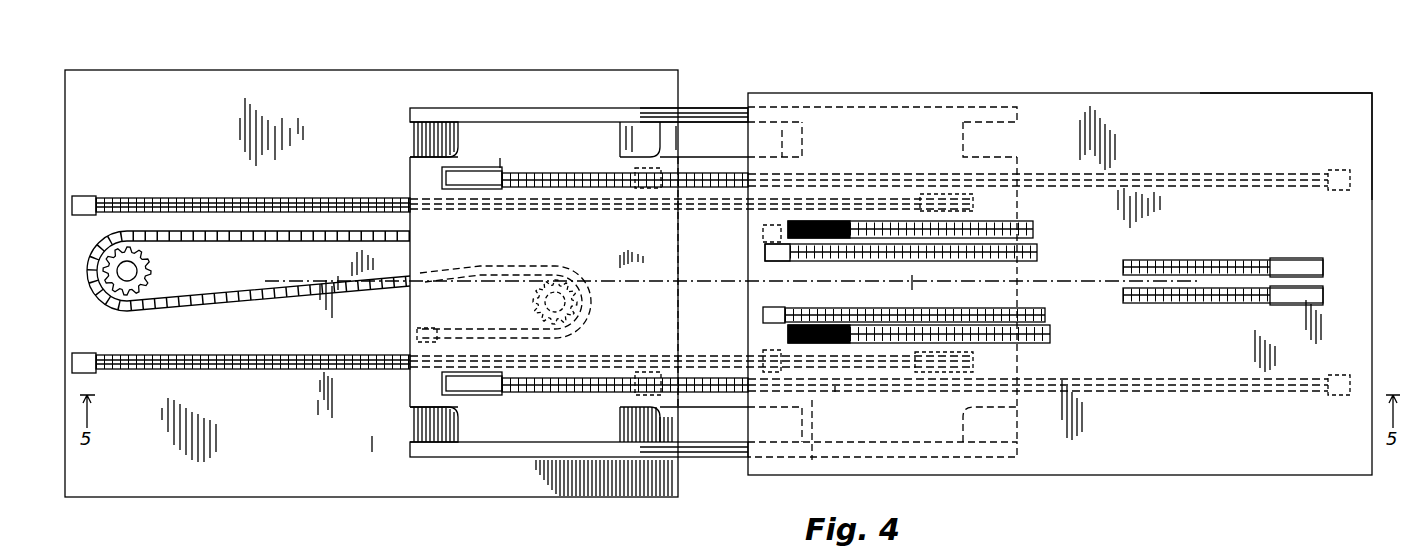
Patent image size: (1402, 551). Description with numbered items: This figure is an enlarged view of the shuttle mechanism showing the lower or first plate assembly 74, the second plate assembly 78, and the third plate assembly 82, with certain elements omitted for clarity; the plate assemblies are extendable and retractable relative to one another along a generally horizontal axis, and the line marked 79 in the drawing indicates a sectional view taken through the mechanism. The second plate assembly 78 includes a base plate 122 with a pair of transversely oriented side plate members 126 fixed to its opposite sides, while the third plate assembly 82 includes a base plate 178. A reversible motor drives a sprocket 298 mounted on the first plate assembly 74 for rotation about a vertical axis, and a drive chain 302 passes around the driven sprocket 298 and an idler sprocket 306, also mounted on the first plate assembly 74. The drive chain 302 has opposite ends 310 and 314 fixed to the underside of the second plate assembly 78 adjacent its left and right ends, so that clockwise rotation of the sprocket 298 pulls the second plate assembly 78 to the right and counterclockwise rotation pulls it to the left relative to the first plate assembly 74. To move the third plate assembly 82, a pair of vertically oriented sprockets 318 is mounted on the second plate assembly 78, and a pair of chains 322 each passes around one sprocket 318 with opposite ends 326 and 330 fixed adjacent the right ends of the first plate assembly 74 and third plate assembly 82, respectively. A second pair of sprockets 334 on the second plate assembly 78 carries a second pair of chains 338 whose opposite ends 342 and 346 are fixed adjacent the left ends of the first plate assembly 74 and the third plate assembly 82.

The first plate assembly 74 is at (270, 61).
The second plate assembly 78 is at (729, 101).
The rail 79 is at (1098, 281).
The third plate assembly 82 is at (1143, 82).
The base plate 178 is at (1254, 136).
The base plate 122 is at (499, 128).
The side plate members 126 is at (446, 100).
The driven sprocket 298 is at (153, 264).
The drive chain 302 is at (283, 298).
The idler sprocket 306 is at (522, 304).
The end of drive chain 310 is at (417, 332).
The end of drive chain 314 is at (1037, 236).
The sprockets 318 is at (480, 167).
The chains 322 is at (570, 173).
The end of chain 326 is at (660, 168).
The end of chain 330 is at (1340, 191).
The sprockets 334 is at (1000, 207).
The chains 338 is at (292, 198).
The end of chain 342 is at (92, 203).
The end of chain 346 is at (763, 240).